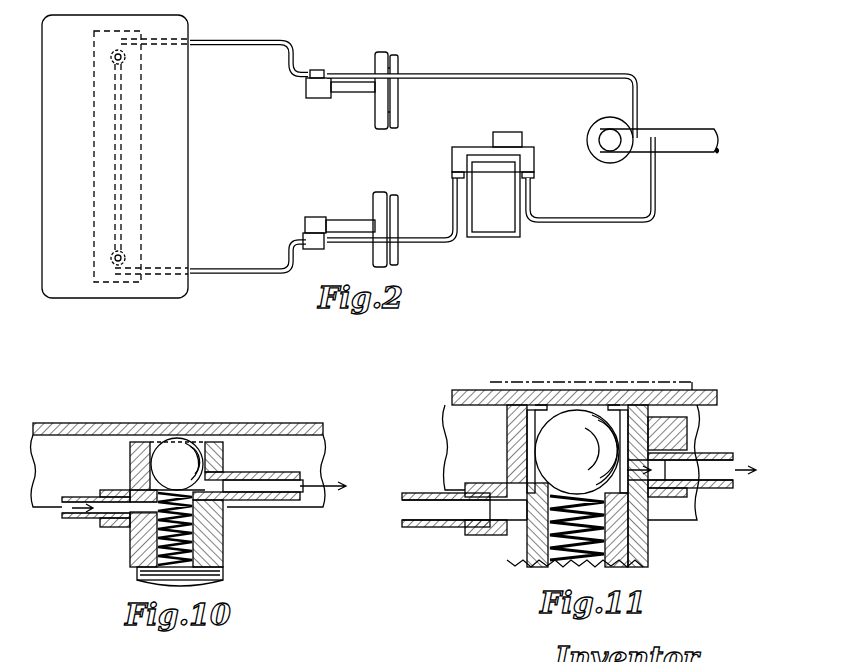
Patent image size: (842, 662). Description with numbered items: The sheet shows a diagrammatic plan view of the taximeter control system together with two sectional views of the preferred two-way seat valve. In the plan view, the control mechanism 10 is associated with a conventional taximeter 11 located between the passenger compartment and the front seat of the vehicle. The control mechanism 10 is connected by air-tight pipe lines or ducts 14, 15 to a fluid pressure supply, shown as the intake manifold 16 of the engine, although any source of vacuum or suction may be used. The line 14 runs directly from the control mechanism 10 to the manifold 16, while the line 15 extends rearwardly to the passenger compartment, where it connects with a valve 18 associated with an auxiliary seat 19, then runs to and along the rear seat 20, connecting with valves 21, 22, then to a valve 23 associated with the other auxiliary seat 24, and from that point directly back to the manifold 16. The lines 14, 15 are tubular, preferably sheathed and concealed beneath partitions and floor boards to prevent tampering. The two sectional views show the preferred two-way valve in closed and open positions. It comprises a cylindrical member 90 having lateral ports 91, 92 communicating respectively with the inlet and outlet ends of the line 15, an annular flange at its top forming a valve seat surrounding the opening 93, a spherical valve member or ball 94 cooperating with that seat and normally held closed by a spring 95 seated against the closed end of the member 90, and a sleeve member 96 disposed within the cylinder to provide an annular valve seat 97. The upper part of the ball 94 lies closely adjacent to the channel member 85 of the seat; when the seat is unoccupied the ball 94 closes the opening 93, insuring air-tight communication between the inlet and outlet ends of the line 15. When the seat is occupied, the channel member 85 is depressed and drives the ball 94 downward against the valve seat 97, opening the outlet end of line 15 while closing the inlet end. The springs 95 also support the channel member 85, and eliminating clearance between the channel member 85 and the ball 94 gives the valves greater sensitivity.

In FIG. 2, the rear seat 20 is at (178, 118).
In FIG. 2, the valve 21 is at (125, 255).
In FIG. 2, the valve 22 is at (125, 57).
In FIG. 2, the valve 23 is at (305, 88).
In FIG. 2, the auxiliary seat 24 is at (378, 108).
In FIG. 2, the pipe line 15 is at (522, 72).
In FIG. 10, the pipe line 15 is at (68, 517).
In FIG. 11, the pipe line 15 is at (418, 528).
In FIG. 2, the control mechanism 10 is at (460, 140).
In FIG. 2, the taximeter 11 is at (493, 196).
In FIG. 2, the pipe line 14 is at (577, 222).
In FIG. 2, the intake manifold 16 is at (668, 132).
In FIG. 2, the valve 18 is at (314, 250).
In FIG. 2, the auxiliary seat 19 is at (378, 200).
In FIG. 10, the channel member 85 is at (296, 430).
In FIG. 11, the channel member 85 is at (700, 402).
In FIG. 10, the cylindrical member 90 is at (130, 545).
In FIG. 11, the cylindrical member 90 is at (507, 552).
In FIG. 10, the lateral port 91 is at (132, 488).
In FIG. 10, the lateral port 92 is at (228, 482).
In FIG. 11, the opening 93 is at (545, 413).
In FIG. 10, the ball 94 is at (177, 450).
In FIG. 11, the ball 94 is at (578, 425).
In FIG. 10, the spring 95 is at (227, 523).
In FIG. 11, the spring 95 is at (585, 541).
In FIG. 10, the sleeve member 96 is at (225, 556).
In FIG. 10, the annular valve seat 97 is at (122, 502).